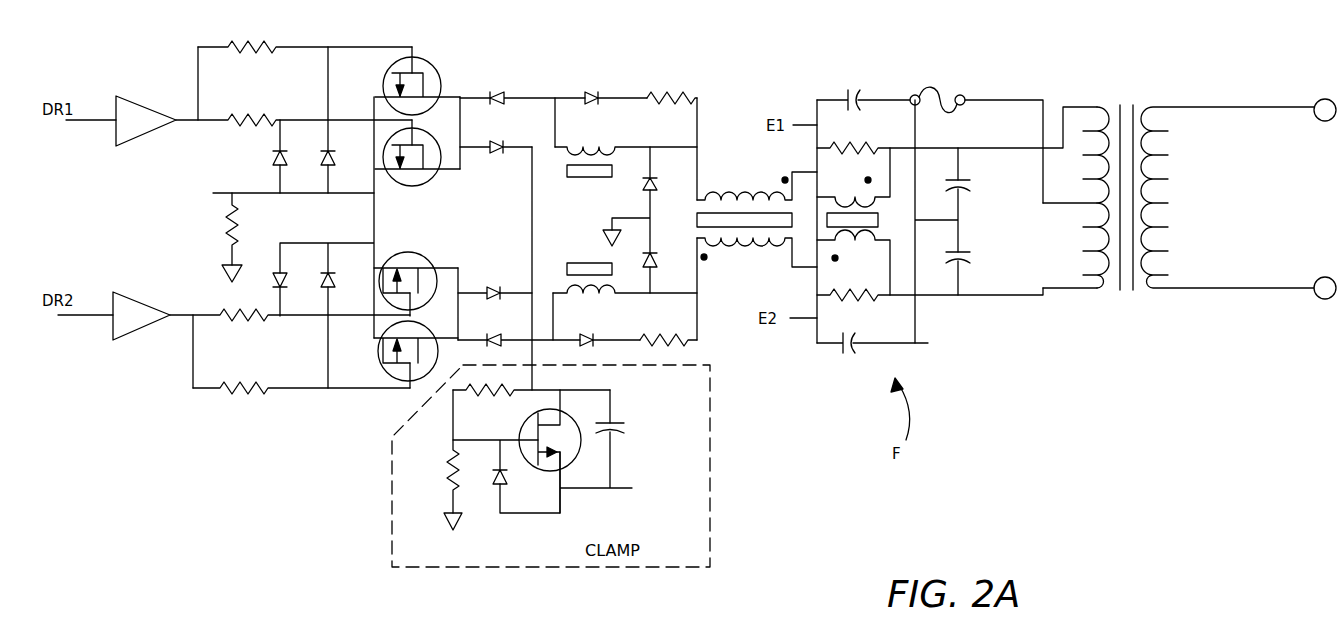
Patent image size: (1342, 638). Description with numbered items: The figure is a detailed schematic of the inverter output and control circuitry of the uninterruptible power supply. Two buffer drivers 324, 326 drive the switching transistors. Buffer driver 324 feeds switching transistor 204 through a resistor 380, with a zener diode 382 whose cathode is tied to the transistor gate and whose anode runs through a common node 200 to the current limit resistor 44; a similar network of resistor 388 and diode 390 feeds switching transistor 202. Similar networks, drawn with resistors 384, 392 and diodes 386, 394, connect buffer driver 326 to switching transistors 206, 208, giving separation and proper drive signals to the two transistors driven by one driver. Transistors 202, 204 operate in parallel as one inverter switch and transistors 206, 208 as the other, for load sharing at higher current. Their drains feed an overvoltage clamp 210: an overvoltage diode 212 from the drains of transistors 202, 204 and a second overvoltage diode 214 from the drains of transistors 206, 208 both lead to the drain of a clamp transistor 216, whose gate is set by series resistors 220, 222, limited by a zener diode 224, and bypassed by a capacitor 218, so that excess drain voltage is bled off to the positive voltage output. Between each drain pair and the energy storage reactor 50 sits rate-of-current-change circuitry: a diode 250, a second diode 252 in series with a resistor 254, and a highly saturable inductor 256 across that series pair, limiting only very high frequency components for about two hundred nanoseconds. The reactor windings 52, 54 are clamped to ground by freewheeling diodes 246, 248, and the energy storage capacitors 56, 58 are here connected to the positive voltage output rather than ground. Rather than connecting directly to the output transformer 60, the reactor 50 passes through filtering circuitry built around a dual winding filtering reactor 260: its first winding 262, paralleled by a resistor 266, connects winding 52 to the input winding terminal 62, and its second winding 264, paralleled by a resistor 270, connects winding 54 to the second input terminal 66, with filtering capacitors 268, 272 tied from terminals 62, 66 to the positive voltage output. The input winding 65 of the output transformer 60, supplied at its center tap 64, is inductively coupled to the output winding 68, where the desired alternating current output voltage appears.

The current limit resistor 44 is at (226, 230).
The energy storage reactor 50 is at (745, 186).
The winding 52 is at (716, 189).
The secondary winding 54 is at (745, 252).
The energy storage capacitor 56 is at (862, 93).
The energy storage capacitor 58 is at (860, 348).
The output transformer 60 is at (1185, 191).
The input winding terminal 62 is at (1100, 92).
The center tap 64 is at (1070, 205).
The input winding 65 is at (1105, 254).
The input winding terminal 66 is at (1082, 290).
The output winding 68 is at (1262, 290).
The common node line 200 is at (234, 192).
The switching transistor 202 is at (433, 68).
The switching transistor 204 is at (437, 178).
The switching transistor 206 is at (428, 252).
The switching transistor 208 is at (378, 346).
The overvoltage clamp 210 is at (712, 472).
The overvoltage diode 212 is at (495, 140).
The second overvoltage diode 214 is at (492, 288).
The clamp transistor 216 is at (543, 470).
The capacitor 218 is at (618, 421).
The resistor 220 is at (498, 392).
The resistor 222 is at (448, 478).
The zener diode 224 is at (492, 472).
The freewheeling diode 246 is at (643, 187).
The second freewheeling diode 248 is at (652, 255).
The diode 250 is at (503, 93).
The diode 252 is at (591, 91).
The resistor 254 is at (663, 92).
The highly saturable inductor 256 is at (604, 140).
The dual winding filtering reactor 260 is at (820, 228).
The first winding 262 is at (847, 191).
The second winding 264 is at (867, 250).
The resistor 266 is at (883, 147).
The filtering capacitor 268 is at (974, 185).
The resistor 270 is at (877, 295).
The filtering capacitor 272 is at (975, 260).
The buffer driver 324 is at (146, 104).
The buffer driver 326 is at (142, 328).
The resistor 380 is at (250, 118).
The zener diode 382 is at (271, 153).
The resistor 384 is at (247, 322).
The zener diode 386 is at (276, 282).
The resistor 388 is at (262, 38).
The diode 390 is at (332, 159).
The resistor 392 is at (226, 389).
The zener diode 394 is at (323, 288).